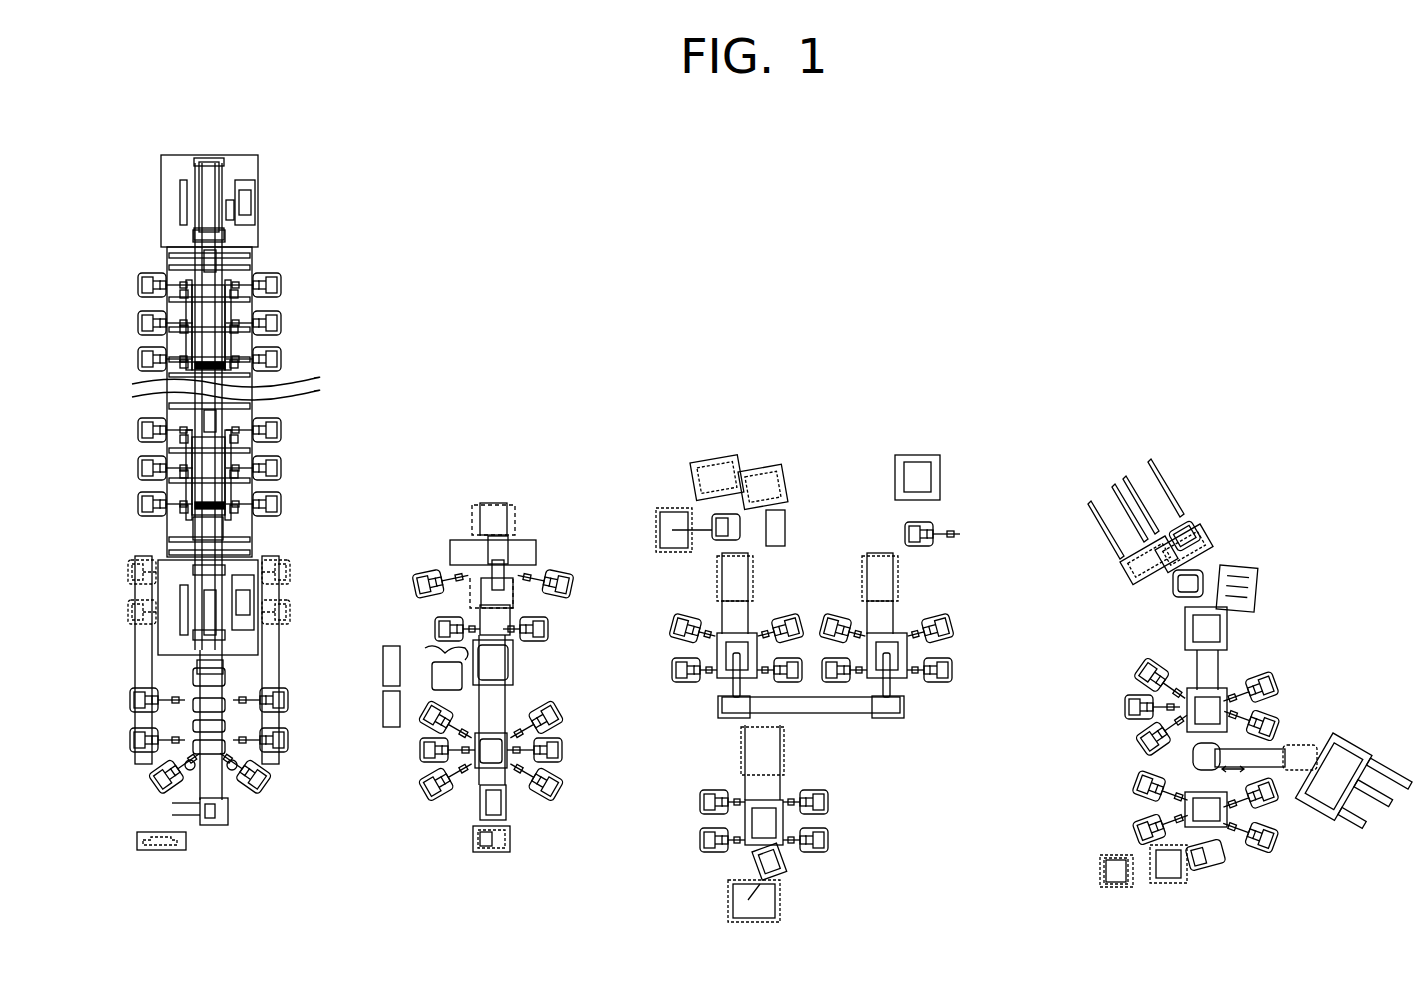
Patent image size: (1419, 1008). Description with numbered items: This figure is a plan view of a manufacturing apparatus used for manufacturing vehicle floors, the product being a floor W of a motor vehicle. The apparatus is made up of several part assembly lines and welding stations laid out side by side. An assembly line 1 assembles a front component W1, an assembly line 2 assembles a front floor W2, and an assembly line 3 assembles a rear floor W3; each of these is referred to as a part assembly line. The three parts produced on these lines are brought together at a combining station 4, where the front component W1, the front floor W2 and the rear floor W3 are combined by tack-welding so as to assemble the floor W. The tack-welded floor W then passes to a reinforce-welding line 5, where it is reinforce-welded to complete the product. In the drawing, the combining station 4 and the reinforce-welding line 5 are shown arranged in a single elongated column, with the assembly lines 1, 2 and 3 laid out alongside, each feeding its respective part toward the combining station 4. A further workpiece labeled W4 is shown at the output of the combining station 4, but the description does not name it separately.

The assembly line 1 is at (495, 478).
The assembly line 2 is at (1149, 443).
The assembly line 3 is at (810, 457).
The combining station 4 is at (290, 658).
The reinforce-welding line 5 is at (292, 404).
The floor W is at (190, 136).
The front component W1 is at (512, 853).
The front floor W2 is at (1093, 873).
The rear floor W3 is at (780, 893).
The workpiece of fourth line W4 is at (188, 840).